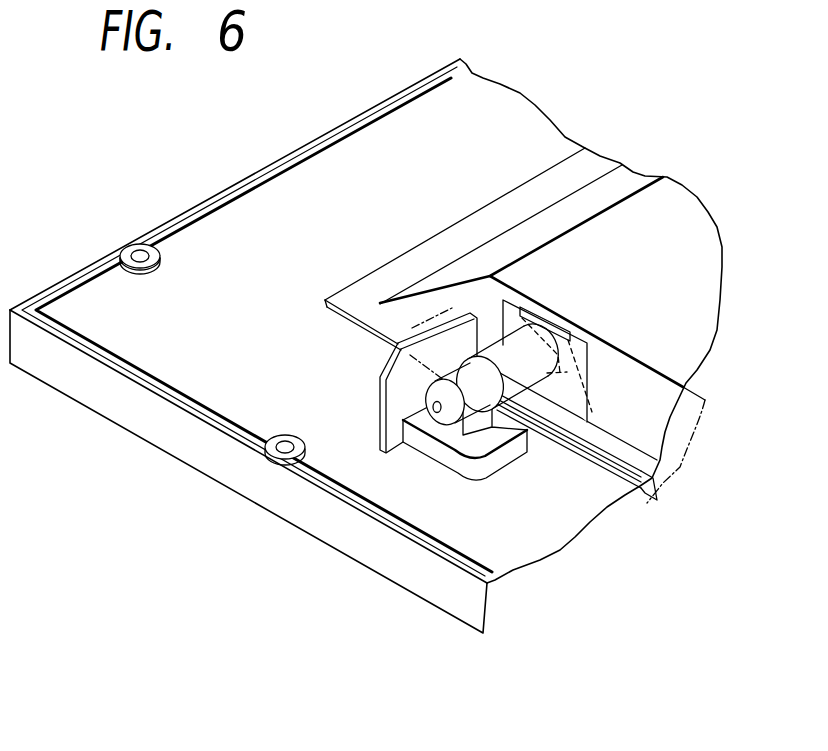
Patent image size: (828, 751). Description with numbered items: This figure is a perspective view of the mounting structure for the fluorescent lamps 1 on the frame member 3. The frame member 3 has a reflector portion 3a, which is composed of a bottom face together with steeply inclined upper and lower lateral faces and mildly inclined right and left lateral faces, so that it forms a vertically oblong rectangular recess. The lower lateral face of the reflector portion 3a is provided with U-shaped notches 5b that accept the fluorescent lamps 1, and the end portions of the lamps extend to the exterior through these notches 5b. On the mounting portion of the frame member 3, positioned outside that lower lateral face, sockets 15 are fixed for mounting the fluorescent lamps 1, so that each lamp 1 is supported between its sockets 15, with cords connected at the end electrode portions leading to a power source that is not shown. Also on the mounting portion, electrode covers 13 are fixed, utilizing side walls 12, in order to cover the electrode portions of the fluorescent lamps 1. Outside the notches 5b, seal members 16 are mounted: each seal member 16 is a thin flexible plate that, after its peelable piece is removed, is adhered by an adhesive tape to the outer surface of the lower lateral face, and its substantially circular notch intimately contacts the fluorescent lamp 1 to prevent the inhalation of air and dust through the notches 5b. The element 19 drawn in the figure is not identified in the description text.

The frame member 3 is at (248, 162).
The reflector portion 3a is at (657, 388).
The side wall 12 is at (378, 410).
The socket 15 is at (475, 437).
The fluorescent lamp 1 is at (526, 412).
The slot 19 is at (555, 318).
The seal member 16 is at (590, 352).
The U-shaped notch 5b is at (588, 404).
The electrode cover 13 is at (653, 502).